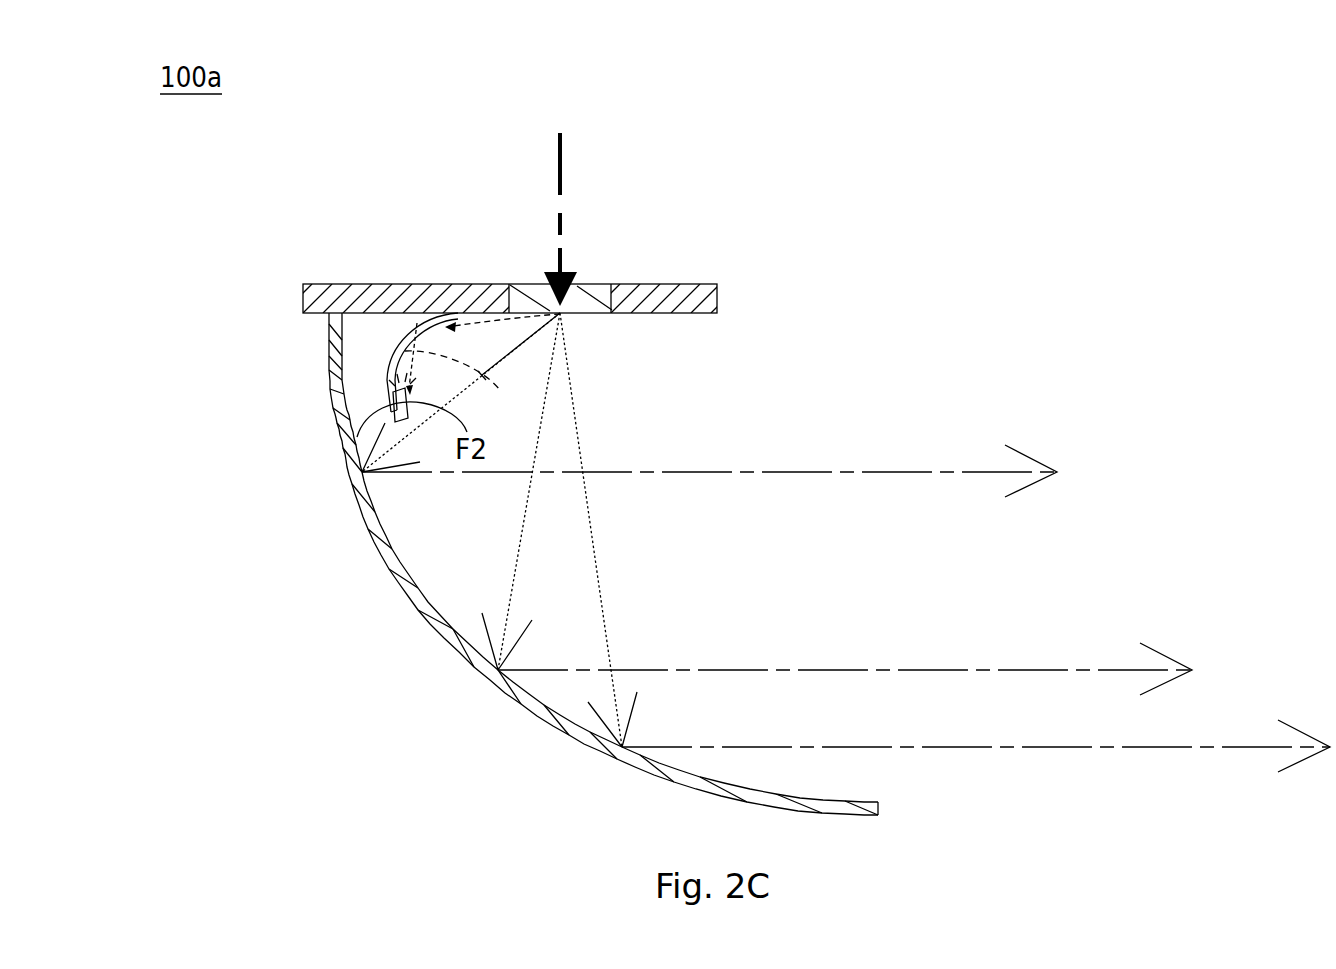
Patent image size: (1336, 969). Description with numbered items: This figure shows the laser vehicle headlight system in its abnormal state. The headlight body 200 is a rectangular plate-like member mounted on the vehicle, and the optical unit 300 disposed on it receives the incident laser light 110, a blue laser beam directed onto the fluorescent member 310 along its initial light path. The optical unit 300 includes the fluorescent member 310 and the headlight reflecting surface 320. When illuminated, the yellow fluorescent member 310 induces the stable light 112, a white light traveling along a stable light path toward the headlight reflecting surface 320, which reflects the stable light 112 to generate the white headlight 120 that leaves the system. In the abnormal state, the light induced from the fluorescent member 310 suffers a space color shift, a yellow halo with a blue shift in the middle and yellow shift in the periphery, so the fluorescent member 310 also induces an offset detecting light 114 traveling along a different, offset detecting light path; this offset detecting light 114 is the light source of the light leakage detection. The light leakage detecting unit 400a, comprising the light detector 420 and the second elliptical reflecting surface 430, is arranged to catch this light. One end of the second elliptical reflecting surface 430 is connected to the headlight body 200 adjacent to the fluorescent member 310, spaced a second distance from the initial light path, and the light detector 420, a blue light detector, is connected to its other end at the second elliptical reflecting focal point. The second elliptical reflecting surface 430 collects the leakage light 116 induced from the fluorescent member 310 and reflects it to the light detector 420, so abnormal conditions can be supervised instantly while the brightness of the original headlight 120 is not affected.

The incident laser light 110 is at (562, 167).
The stable light 112 is at (597, 555).
The offset detecting light 114 is at (485, 324).
The leakage light 116 is at (470, 385).
The headlight 120 is at (1165, 747).
The headlight body 200 is at (717, 300).
The optical unit 300 is at (287, 143).
The fluorescent member 310 is at (525, 283).
The headlight reflecting surface 320 is at (328, 358).
The light leakage detecting unit 400a is at (207, 412).
The light detector 420 is at (360, 473).
The second elliptical reflecting surface 430 is at (387, 370).